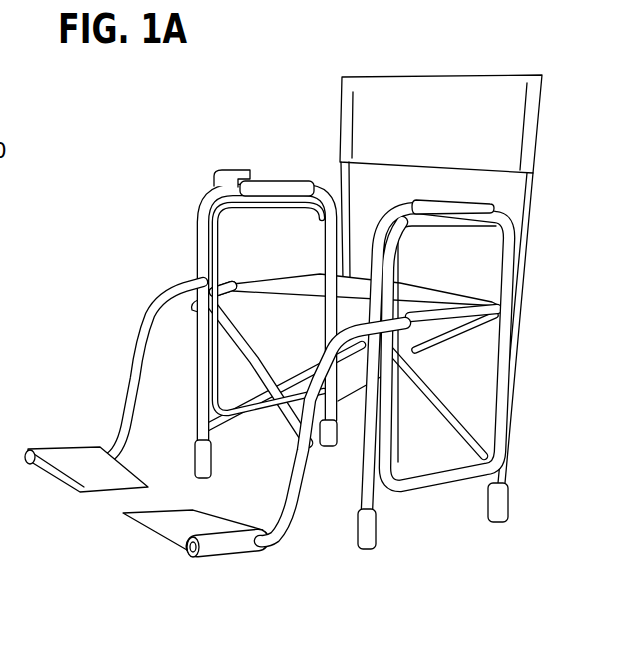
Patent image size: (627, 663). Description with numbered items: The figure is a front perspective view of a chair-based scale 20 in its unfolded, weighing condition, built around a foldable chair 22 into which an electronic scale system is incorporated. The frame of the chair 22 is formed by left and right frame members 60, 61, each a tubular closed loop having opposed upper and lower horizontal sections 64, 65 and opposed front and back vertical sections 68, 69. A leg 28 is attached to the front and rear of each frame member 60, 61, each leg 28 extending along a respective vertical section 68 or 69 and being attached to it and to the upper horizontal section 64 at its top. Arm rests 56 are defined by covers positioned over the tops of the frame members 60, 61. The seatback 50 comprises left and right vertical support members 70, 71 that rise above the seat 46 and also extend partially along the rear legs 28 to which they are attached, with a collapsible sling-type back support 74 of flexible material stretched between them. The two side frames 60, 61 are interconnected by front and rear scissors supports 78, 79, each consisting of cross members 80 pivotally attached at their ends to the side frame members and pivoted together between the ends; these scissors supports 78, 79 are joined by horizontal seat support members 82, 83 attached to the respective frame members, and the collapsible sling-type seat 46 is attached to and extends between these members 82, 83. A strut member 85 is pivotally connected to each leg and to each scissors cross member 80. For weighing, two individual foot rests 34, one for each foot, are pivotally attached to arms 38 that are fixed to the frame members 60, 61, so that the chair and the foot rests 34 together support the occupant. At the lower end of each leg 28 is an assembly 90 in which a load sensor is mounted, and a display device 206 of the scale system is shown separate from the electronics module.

The chair-based scale 20 is at (250, 110).
The chair 22 is at (202, 467).
The leg 28 is at (199, 436).
The foot rest 34 is at (53, 473).
The arm 38 is at (132, 418).
The seat 46 is at (424, 306).
The seatback 50 is at (439, 259).
The arm rest 56 is at (281, 185).
The left frame member 60 is at (269, 342).
The right frame member 61 is at (418, 344).
The upper horizontal section 64 is at (207, 212).
The lower horizontal section 65 is at (259, 419).
The front vertical section 68 is at (385, 407).
The back vertical section 69 is at (503, 371).
The left vertical support member 70 is at (340, 183).
The right vertical support member 71 is at (529, 195).
The back support 74 is at (487, 93).
The front scissors support 78 is at (270, 358).
The rear scissors support 79 is at (432, 372).
The cross member 80 is at (245, 407).
The horizontal seat support member 82 is at (223, 290).
The horizontal seat support member 83 is at (494, 305).
The strut member 85 is at (208, 330).
The load sensor assembly 90 is at (350, 537).
The display device 206 is at (226, 170).